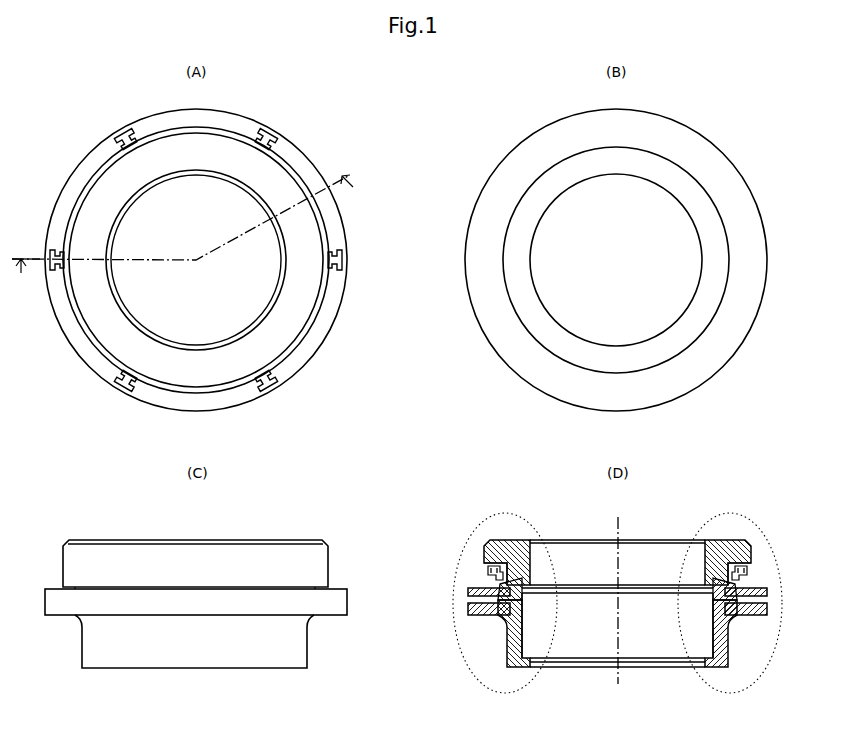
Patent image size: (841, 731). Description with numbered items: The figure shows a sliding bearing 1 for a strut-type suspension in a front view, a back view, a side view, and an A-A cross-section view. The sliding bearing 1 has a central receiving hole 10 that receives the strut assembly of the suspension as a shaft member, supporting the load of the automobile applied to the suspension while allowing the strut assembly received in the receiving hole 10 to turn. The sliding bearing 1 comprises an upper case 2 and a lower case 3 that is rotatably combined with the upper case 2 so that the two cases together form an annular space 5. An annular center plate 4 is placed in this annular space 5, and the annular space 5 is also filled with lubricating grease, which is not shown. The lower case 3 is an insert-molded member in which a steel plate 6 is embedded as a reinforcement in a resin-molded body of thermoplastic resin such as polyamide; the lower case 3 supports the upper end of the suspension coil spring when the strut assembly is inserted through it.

The sliding bearing 1 is at (350, 95).
The upper case 2 is at (217, 147).
The lower case 3 is at (290, 153).
The annular center plate 4 is at (492, 552).
The annular space 5 is at (490, 566).
The steel plate 6 is at (477, 596).
The receiving hole 10 is at (151, 206).